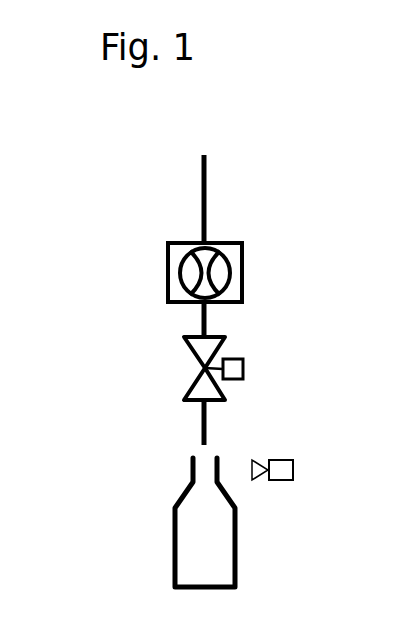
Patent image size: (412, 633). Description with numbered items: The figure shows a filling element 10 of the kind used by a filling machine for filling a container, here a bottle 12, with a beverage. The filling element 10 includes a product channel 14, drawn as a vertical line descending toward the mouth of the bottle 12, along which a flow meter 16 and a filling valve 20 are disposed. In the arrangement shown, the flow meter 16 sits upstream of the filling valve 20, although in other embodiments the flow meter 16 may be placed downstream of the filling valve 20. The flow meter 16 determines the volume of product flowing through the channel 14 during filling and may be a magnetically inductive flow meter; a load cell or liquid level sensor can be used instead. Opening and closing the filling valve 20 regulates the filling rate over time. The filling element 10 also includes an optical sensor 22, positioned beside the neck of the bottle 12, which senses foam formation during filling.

The filling element 10 is at (118, 214).
The bottle 12 is at (205, 545).
The product channel 14 is at (205, 210).
The flow meter 16 is at (230, 270).
The filling valve 20 is at (243, 359).
The optical sensor 22 is at (282, 470).